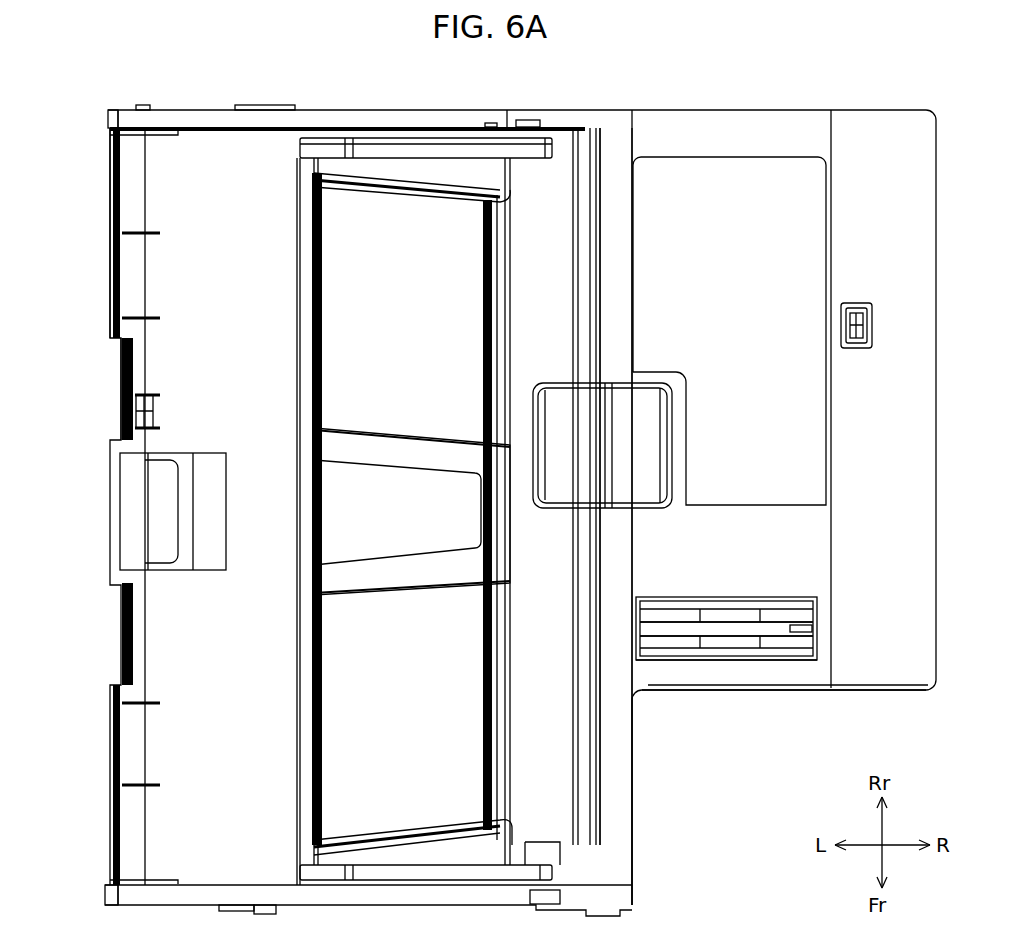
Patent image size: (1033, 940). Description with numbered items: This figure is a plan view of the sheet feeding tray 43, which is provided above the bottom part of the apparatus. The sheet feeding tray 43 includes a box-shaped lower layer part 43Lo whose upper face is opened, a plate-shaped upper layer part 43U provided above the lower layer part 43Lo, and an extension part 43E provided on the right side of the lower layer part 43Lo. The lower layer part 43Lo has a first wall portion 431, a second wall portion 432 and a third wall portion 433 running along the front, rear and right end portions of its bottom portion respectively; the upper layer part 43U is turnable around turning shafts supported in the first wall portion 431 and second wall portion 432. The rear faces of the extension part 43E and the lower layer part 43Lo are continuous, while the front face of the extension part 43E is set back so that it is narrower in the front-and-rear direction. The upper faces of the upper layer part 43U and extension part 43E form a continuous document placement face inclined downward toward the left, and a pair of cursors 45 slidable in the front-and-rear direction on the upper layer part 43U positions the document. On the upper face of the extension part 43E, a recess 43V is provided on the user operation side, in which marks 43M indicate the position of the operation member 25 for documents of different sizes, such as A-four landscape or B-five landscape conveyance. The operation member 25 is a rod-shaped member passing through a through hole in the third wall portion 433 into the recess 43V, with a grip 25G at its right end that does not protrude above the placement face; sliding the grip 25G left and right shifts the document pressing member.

The sheet feeding tray 43 is at (747, 805).
The second wall portion 432 is at (108, 127).
The upper layer part 43U is at (178, 216).
The lower layer part 43Lo is at (120, 372).
The first wall portion 431 is at (105, 897).
The cursors 45 is at (553, 150).
The third wall portion 433 is at (632, 812).
The operation member 25 is at (677, 627).
The marks 43M is at (755, 640).
The grip 25G is at (815, 628).
The recess 43V is at (745, 660).
The extension part 43E is at (805, 692).